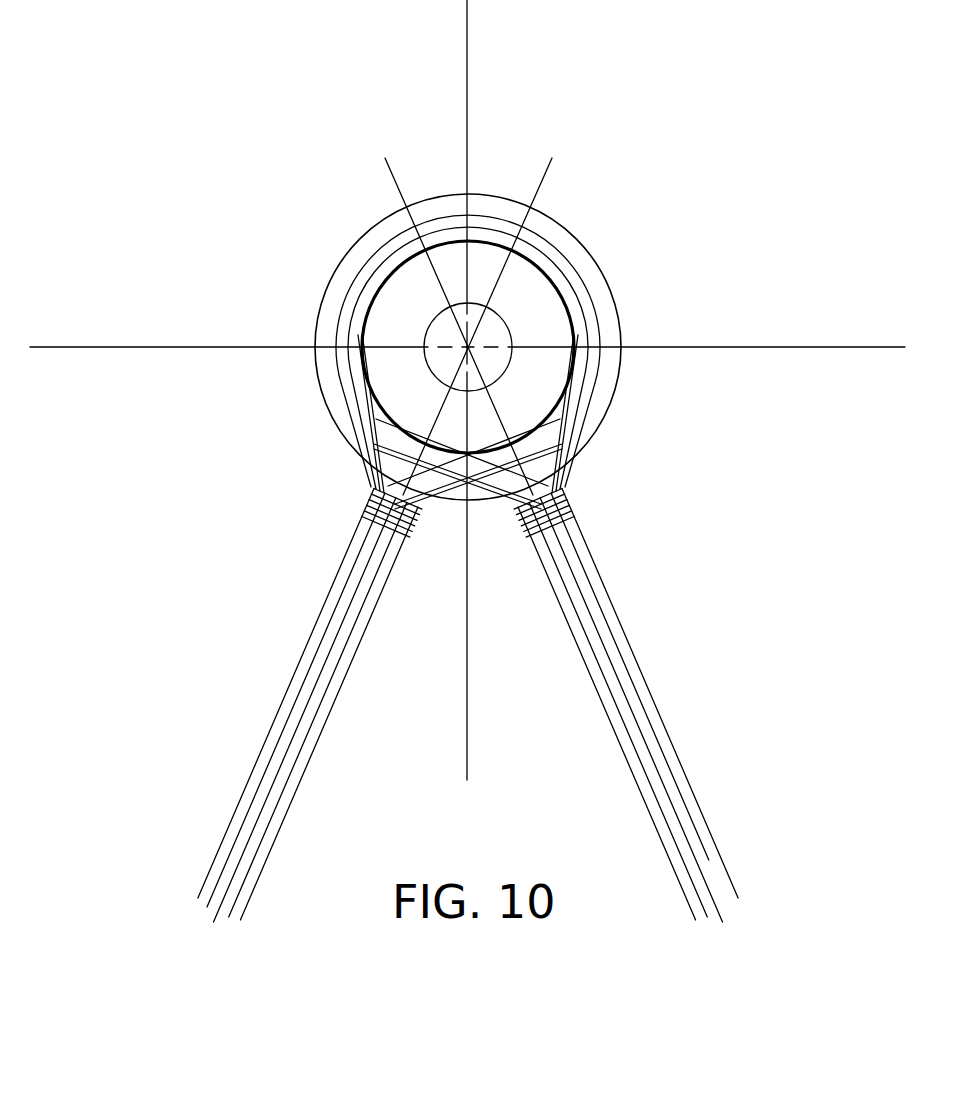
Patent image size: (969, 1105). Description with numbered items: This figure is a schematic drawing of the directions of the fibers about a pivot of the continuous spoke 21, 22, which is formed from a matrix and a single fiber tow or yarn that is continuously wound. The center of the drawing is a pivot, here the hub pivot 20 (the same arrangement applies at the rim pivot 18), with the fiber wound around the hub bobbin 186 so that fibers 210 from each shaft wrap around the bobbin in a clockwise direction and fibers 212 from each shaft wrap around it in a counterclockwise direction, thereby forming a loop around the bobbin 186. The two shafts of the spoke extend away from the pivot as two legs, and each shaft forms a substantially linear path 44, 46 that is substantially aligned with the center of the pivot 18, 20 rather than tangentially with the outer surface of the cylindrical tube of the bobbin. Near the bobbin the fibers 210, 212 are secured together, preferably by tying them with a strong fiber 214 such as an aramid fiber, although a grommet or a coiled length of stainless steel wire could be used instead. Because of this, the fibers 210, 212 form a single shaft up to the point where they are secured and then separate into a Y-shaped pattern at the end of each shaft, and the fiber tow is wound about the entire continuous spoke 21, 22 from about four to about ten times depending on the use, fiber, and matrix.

The rim pivot 18 is at (472, 344).
The hub pivot 20 is at (468, 347).
The hub bobbin 186 is at (617, 387).
The continuous spoke 21 is at (668, 718).
The continuous spoke 22 is at (308, 705).
The linear path 44 is at (393, 180).
The linear path 46 is at (560, 182).
The fibers 210 is at (378, 470).
The fibers 212 is at (565, 458).
The strong fiber 214 is at (367, 512).